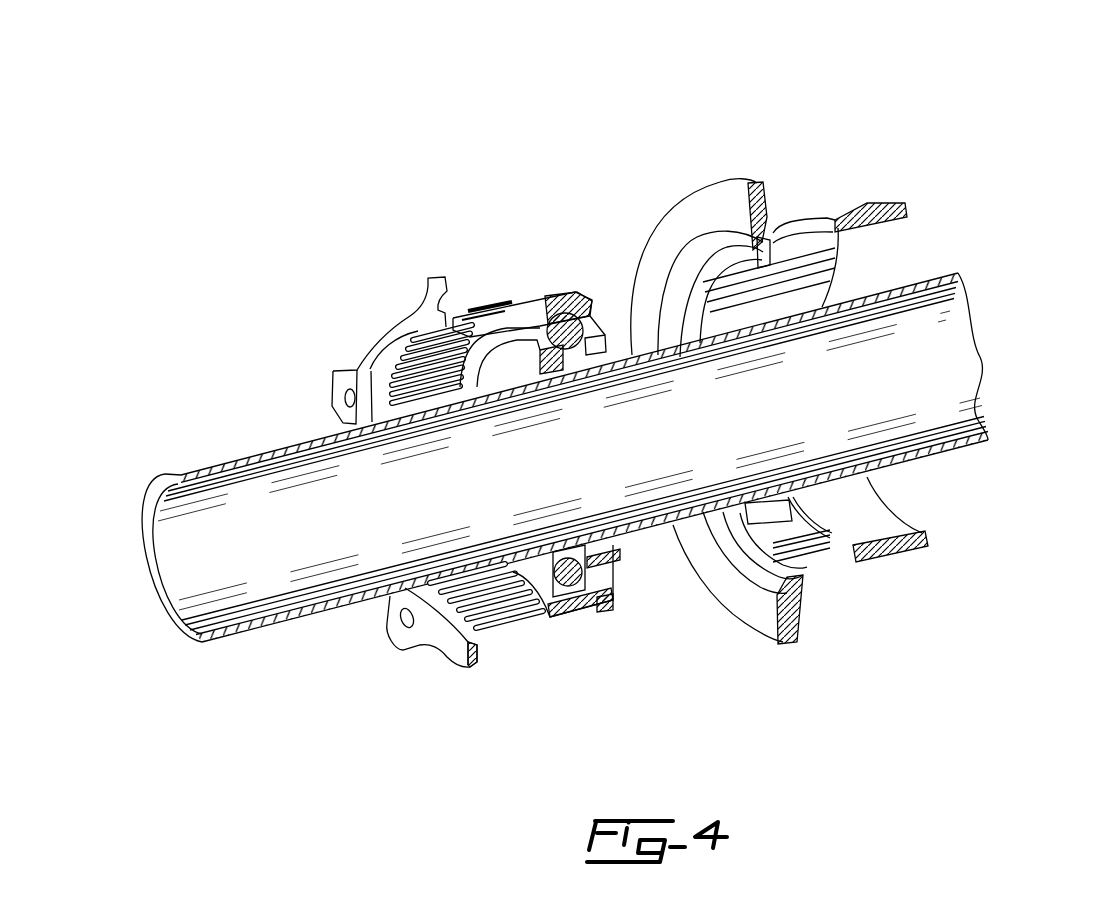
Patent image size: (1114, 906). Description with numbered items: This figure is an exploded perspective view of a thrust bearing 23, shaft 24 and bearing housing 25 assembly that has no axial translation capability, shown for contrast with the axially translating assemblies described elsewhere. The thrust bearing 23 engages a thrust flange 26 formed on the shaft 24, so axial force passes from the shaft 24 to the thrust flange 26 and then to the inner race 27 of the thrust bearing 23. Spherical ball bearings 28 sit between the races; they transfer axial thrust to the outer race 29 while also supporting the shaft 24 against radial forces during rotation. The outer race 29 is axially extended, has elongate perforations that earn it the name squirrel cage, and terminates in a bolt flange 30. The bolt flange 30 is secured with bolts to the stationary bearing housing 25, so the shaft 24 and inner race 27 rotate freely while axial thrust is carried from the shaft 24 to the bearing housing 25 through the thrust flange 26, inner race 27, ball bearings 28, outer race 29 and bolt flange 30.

The thrust bearing 23 is at (478, 270).
The shaft 24 is at (937, 458).
The bearing housing 25 is at (836, 217).
The thrust flange 26 is at (615, 330).
The inner race 27 is at (538, 567).
The spherical ball bearings 28 is at (555, 314).
The outer race 29 is at (582, 618).
The bolt flange 30 is at (353, 370).